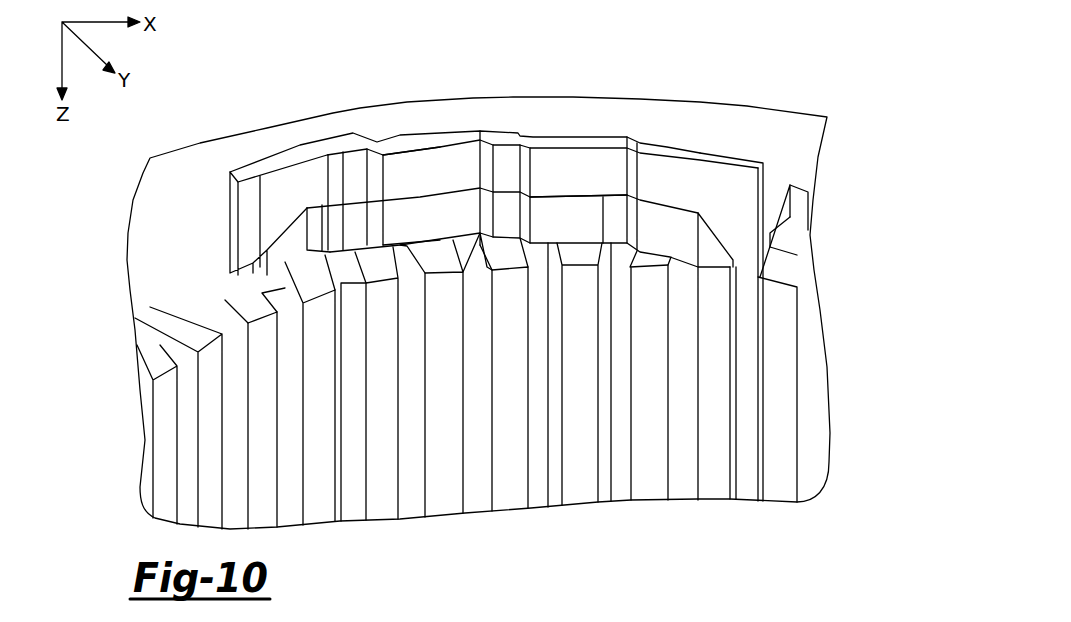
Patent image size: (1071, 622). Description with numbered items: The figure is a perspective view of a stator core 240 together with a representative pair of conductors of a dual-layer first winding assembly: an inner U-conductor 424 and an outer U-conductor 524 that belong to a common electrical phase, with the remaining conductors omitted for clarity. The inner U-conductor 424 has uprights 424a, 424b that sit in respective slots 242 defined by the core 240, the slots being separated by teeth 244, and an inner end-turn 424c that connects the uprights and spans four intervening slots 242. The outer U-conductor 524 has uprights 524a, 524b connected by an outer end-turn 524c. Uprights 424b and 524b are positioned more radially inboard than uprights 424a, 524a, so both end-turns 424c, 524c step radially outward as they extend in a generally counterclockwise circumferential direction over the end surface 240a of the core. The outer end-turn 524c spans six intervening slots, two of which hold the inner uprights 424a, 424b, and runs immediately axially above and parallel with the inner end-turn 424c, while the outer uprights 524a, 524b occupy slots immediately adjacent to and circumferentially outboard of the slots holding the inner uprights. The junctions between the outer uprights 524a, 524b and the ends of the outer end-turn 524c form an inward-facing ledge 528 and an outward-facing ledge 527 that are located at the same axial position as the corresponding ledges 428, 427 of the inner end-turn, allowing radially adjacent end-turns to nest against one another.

The stator core 240 is at (852, 271).
The end surface 240a is at (795, 140).
The slot 242 is at (538, 500).
The tooth 244 is at (380, 503).
The inner U-conductor 424 is at (455, 178).
The upright 424a is at (330, 267).
The upright 424b is at (683, 487).
The inner end-turn 424c is at (410, 220).
The outward-facing ledge 427 is at (703, 232).
The inward-facing ledge 428 is at (320, 282).
The outer U-conductor 524 is at (520, 118).
The upright 524a is at (268, 287).
The upright 524b is at (750, 487).
The outer end-turn 524c is at (588, 175).
The outward-facing ledge 527 is at (772, 247).
The inward-facing ledge 528 is at (258, 270).